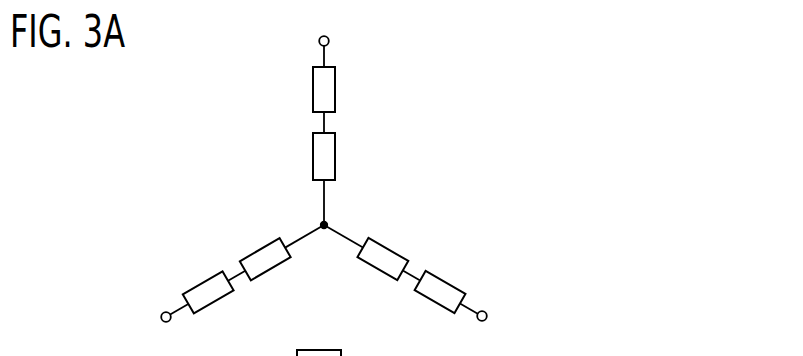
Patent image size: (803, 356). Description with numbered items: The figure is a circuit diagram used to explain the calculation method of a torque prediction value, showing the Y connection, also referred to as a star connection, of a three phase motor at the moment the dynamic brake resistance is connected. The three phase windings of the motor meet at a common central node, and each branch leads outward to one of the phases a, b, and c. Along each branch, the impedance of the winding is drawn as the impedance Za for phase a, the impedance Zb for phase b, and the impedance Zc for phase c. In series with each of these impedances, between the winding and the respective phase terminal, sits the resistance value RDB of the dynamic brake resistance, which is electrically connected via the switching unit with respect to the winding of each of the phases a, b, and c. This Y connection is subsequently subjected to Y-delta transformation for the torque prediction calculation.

The phase a is at (155, 323).
The phase b is at (324, 26).
The phase c is at (494, 318).
The resistance value of the dynamic brake resistance RDB is at (322, 190).
The impedance of phase a Za is at (265, 243).
The impedance of phase b Zb is at (309, 156).
The impedance of phase c Zc is at (382, 245).